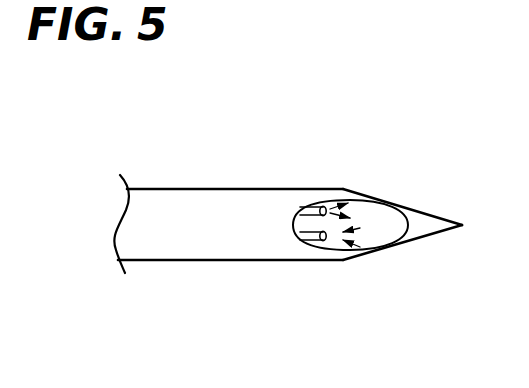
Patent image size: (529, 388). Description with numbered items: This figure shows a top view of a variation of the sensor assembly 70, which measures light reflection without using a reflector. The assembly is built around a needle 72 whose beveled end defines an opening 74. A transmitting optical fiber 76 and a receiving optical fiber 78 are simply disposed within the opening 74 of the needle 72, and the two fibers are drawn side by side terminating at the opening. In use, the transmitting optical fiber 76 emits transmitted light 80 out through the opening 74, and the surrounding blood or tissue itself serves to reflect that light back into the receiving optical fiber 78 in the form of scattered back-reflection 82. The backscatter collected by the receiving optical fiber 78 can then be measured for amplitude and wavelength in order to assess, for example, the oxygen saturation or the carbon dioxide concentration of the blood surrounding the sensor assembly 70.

The sensor assembly 70 is at (252, 150).
The needle 72 is at (217, 188).
The opening 74 is at (412, 240).
The transmitting optical fiber 76 is at (317, 206).
The receiving optical fiber 78 is at (317, 241).
The transmitted light 80 is at (378, 190).
The scattered back-reflection 82 is at (375, 270).